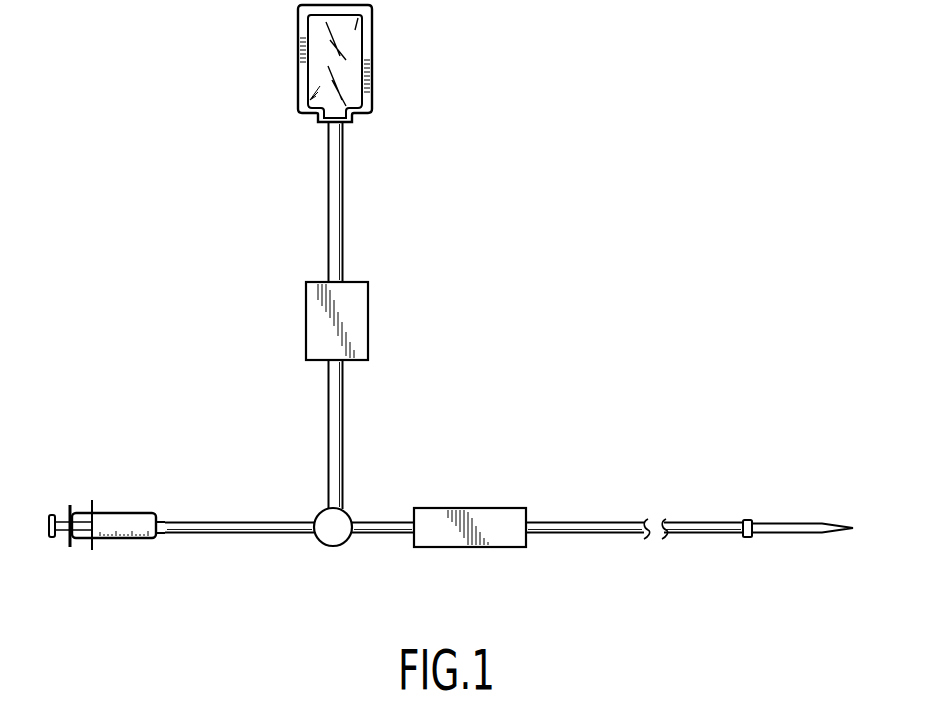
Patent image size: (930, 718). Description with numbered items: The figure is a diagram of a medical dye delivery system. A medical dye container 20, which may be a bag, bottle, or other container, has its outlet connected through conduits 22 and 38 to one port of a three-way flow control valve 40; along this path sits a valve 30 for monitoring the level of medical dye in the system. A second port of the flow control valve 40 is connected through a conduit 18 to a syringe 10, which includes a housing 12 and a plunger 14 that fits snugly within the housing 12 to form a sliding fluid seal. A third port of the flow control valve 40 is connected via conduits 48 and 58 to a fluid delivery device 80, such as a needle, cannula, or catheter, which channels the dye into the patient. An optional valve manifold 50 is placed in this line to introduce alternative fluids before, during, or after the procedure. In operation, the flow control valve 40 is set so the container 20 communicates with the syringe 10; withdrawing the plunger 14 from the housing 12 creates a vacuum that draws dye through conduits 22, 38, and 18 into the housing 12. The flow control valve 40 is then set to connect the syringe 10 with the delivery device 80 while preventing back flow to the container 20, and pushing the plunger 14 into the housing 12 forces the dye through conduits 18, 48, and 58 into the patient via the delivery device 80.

The syringe 10 is at (80, 548).
The housing 12 is at (118, 539).
The plunger 14 is at (85, 513).
The conduit 18 is at (210, 534).
The medical dye container 20 is at (374, 58).
The conduit 22 is at (343, 195).
The valve 30 is at (368, 315).
The conduit 38 is at (343, 430).
The flow control valve 40 is at (333, 547).
The conduit 48 is at (398, 535).
The valve manifold 50 is at (474, 548).
The conduit 58 is at (575, 534).
The fluid delivery device 80 is at (772, 538).